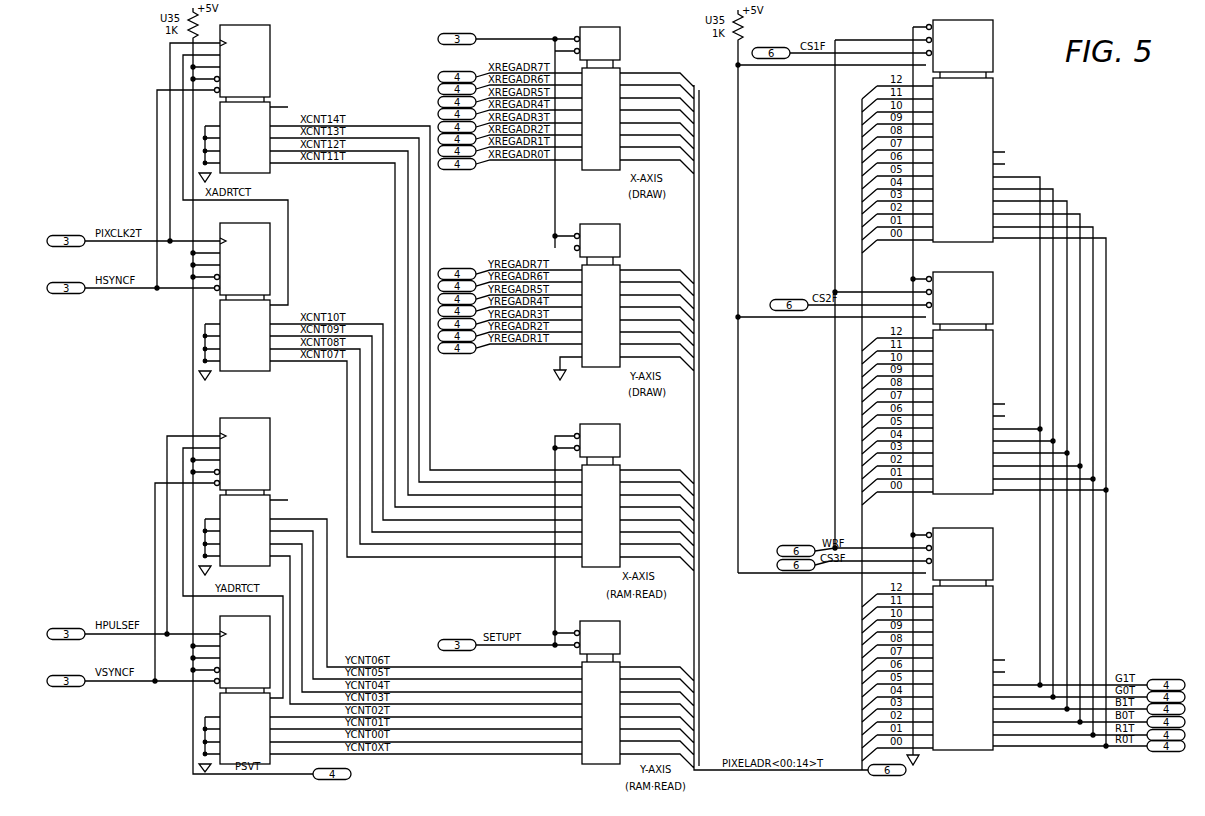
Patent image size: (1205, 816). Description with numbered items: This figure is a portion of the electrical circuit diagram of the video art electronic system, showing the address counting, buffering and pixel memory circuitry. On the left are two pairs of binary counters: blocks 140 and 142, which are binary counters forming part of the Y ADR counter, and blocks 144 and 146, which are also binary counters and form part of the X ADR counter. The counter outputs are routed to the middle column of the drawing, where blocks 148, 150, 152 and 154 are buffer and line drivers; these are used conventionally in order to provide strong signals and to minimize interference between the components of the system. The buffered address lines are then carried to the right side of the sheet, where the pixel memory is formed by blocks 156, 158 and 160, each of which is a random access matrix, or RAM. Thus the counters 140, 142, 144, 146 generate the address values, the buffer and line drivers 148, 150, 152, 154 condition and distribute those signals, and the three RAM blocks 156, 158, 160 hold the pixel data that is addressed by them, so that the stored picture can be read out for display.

The binary counter 140 is at (270, 50).
The binary counter 142 is at (268, 236).
The binary counter 144 is at (268, 437).
The binary counter 146 is at (268, 636).
The buffer and line driver 148 is at (620, 36).
The buffer and line driver 150 is at (620, 236).
The buffer and line driver 152 is at (620, 435).
The buffer and line driver 154 is at (620, 633).
The random access matrix (RAM) 156 is at (993, 56).
The random access matrix (RAM) 158 is at (993, 297).
The random access matrix (RAM) 160 is at (993, 545).